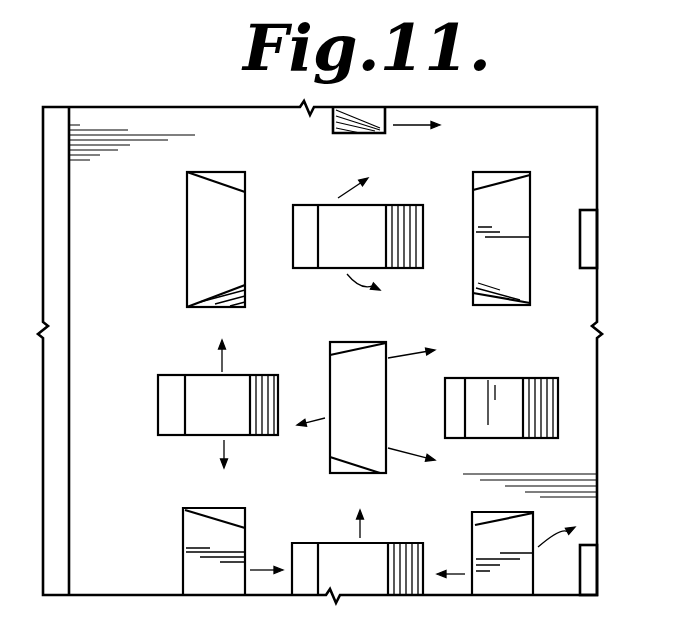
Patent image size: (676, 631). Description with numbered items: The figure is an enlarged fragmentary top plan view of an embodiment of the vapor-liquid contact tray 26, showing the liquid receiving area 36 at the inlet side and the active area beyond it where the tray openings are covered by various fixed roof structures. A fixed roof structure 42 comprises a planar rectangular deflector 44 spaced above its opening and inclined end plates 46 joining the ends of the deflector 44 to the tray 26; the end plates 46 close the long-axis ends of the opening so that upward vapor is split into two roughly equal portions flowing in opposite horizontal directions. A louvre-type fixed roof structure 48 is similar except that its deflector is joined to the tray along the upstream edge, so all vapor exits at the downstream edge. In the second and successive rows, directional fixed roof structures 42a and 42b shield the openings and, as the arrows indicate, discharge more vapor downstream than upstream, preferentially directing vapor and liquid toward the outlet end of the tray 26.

The tray 26 is at (588, 183).
The liquid receiving area 36 is at (58, 443).
The fixed roof structure 42 is at (186, 363).
The directional fixed roof structure 42a is at (538, 182).
The directional fixed roof structure 42b is at (365, 220).
The deflector 44 is at (378, 418).
The end plate 46 is at (340, 350).
The louvre-type fixed roof structure 48 is at (203, 241).